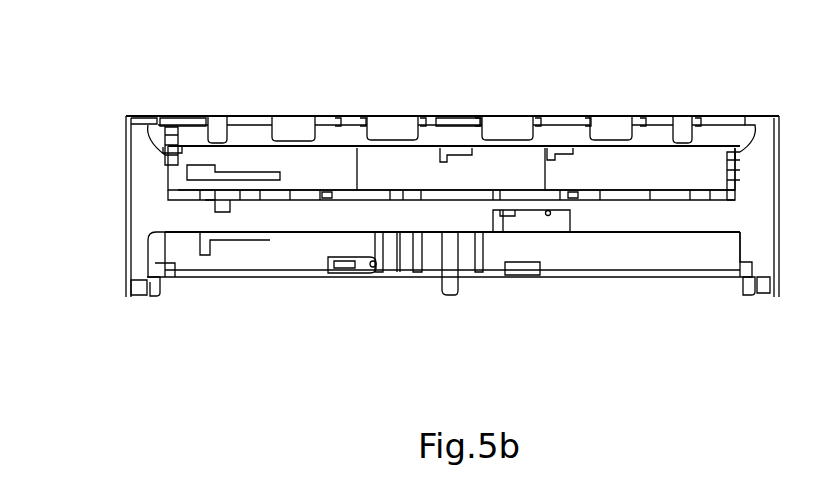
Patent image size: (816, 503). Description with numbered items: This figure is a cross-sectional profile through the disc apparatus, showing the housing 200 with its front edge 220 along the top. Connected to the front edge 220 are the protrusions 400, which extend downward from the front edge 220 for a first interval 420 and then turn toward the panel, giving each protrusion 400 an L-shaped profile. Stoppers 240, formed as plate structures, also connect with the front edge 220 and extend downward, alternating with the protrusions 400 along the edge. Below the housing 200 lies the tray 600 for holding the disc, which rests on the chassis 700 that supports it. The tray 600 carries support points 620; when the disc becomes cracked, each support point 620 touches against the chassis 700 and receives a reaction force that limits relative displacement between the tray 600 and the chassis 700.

The housing 200 is at (757, 117).
The front edge 220 is at (256, 117).
The stopper 240 is at (503, 118).
The protrusion 400 is at (567, 118).
The first interval 420 is at (181, 116).
The tray 600 is at (640, 168).
The support point 620 is at (325, 198).
The chassis 700 is at (723, 215).